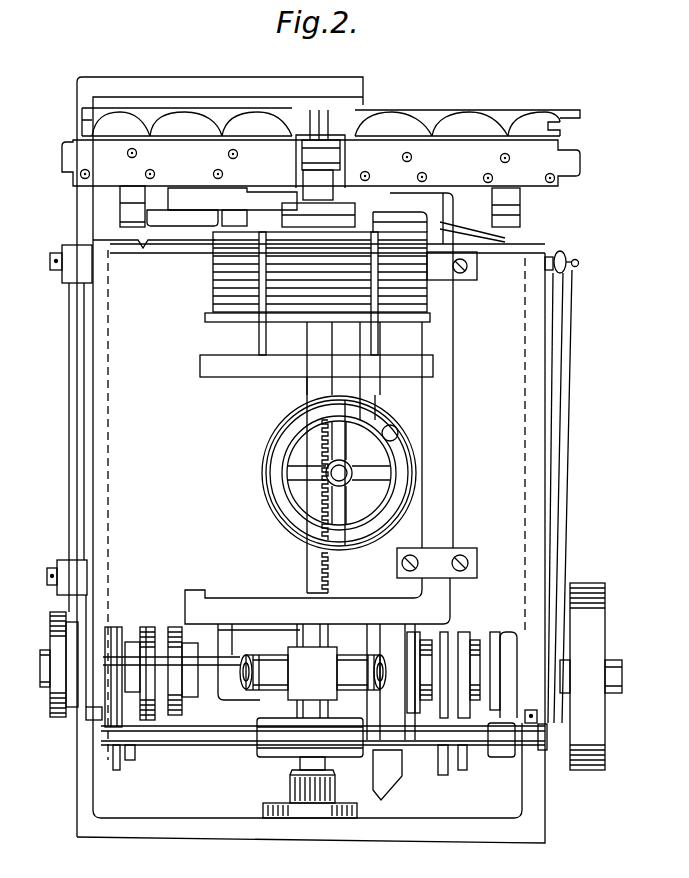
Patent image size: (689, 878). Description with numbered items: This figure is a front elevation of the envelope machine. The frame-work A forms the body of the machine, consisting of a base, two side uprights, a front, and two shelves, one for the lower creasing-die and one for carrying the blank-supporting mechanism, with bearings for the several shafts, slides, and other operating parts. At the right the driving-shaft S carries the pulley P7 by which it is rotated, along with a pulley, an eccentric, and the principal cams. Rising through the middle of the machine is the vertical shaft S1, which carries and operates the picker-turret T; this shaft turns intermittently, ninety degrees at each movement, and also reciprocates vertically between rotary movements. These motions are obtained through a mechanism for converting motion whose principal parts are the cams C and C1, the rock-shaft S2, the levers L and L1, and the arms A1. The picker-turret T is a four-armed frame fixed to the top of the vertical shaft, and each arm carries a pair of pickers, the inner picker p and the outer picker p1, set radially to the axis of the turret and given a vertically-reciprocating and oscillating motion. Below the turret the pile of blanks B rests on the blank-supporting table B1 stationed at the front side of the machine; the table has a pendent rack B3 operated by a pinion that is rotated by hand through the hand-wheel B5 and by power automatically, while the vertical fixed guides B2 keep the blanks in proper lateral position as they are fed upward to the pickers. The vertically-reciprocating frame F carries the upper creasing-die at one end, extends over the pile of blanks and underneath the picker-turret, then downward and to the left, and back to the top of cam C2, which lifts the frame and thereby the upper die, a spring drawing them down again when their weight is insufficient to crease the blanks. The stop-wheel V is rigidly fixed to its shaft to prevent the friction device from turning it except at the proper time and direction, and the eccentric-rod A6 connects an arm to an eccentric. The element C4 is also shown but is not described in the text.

The frame-work A is at (313, 460).
The arms A1 is at (350, 670).
The eccentric-rod A6 is at (147, 627).
The pile of blanks B is at (320, 283).
The blank-supporting table B1 is at (203, 327).
The vertical fixed guides B2 is at (262, 341).
The pendent rack B3 is at (307, 393).
The hand-wheel B5 is at (265, 466).
The cam C is at (387, 775).
The cam C1 is at (497, 632).
The cam C2 is at (173, 745).
The pawl lever C4 is at (127, 745).
The vertically-reciprocating frame F is at (320, 405).
The lever L is at (302, 706).
The lever L1 is at (497, 760).
The pulley P7 is at (602, 617).
The driving-shaft S is at (613, 663).
The vertical shaft S1 is at (295, 763).
The rock-shaft S2 is at (78, 737).
The picker-turret T is at (321, 163).
The stop-wheel V is at (118, 627).
The inner picker p is at (329, 122).
The outer picker p1 is at (331, 167).